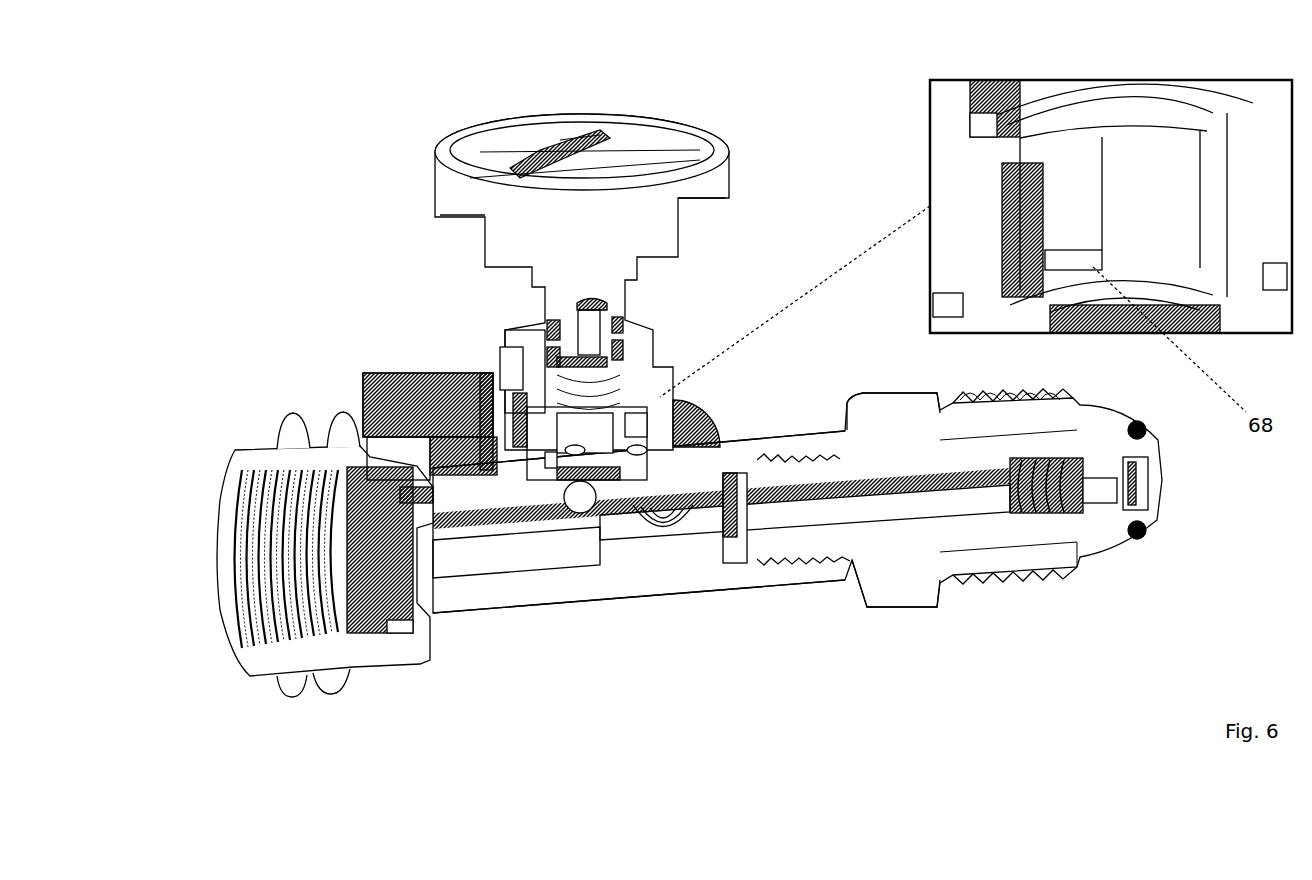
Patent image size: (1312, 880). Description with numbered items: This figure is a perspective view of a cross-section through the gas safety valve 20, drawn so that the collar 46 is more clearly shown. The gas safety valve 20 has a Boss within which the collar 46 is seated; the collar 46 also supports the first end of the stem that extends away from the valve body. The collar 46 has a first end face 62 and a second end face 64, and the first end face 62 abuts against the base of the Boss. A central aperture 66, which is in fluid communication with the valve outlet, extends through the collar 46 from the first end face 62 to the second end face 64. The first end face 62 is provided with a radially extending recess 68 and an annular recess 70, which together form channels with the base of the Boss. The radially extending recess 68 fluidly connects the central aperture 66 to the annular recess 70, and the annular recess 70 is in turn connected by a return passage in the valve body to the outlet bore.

The gas safety valve 20 is at (290, 105).
The second end face 64 is at (537, 312).
The collar 46 is at (527, 357).
The central aperture 66 is at (590, 413).
The radially extending recess 68 is at (573, 445).
The annular recess 70 is at (640, 448).
The first end face 62 is at (550, 462).
The boss Boss is at (512, 406).